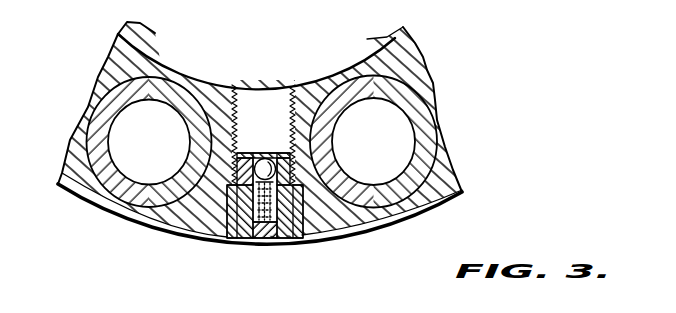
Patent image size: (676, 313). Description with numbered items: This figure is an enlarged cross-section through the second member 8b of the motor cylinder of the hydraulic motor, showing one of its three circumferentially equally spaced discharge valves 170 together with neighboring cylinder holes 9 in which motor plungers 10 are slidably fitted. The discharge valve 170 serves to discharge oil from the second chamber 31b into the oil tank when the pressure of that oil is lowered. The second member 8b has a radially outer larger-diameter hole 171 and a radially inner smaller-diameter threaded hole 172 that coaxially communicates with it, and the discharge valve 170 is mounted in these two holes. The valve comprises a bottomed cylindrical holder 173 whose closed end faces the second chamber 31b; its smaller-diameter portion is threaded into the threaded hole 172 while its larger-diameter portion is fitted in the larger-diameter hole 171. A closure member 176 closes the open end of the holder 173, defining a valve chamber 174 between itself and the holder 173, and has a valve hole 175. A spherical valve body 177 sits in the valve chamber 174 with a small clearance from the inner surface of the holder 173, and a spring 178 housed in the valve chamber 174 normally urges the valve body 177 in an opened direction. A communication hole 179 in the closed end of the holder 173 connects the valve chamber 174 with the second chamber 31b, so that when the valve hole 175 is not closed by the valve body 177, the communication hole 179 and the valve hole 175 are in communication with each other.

The second member 8b is at (381, 223).
The cylinder hole 9 is at (105, 181).
The motor plunger 10 is at (190, 76).
The second chamber 31b is at (279, 53).
The discharge valve 170 is at (252, 248).
The larger-diameter hole 171 is at (323, 238).
The threaded hole 172 is at (289, 80).
The holder 173 is at (226, 212).
The valve chamber 174 is at (304, 208).
The valve hole 175 is at (265, 243).
The closure member 176 is at (283, 241).
The valve body 177 is at (262, 152).
The spring 178 is at (242, 241).
The communication hole 179 is at (320, 143).